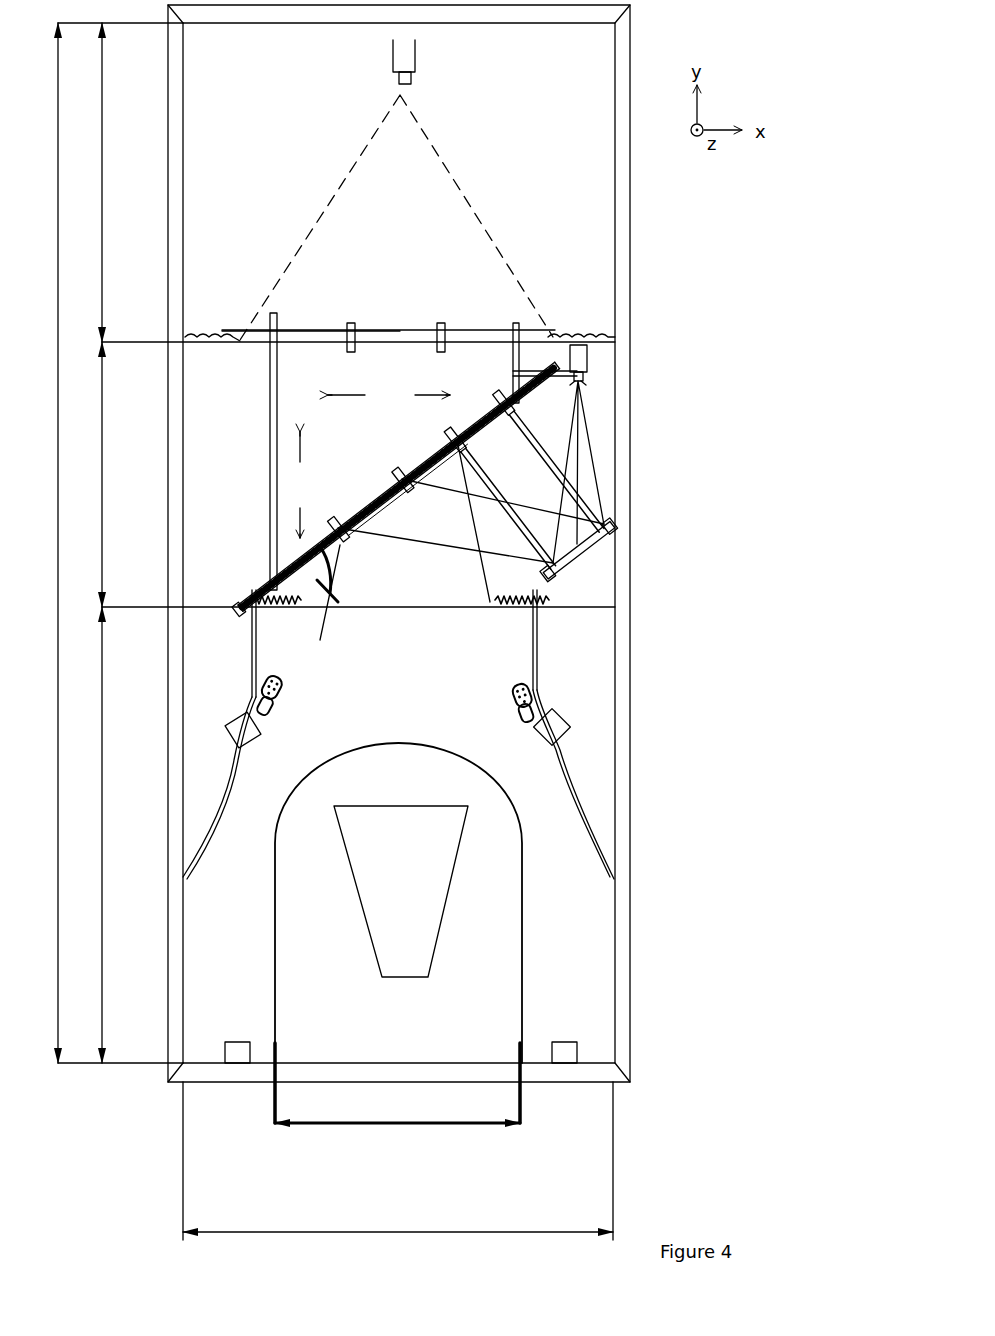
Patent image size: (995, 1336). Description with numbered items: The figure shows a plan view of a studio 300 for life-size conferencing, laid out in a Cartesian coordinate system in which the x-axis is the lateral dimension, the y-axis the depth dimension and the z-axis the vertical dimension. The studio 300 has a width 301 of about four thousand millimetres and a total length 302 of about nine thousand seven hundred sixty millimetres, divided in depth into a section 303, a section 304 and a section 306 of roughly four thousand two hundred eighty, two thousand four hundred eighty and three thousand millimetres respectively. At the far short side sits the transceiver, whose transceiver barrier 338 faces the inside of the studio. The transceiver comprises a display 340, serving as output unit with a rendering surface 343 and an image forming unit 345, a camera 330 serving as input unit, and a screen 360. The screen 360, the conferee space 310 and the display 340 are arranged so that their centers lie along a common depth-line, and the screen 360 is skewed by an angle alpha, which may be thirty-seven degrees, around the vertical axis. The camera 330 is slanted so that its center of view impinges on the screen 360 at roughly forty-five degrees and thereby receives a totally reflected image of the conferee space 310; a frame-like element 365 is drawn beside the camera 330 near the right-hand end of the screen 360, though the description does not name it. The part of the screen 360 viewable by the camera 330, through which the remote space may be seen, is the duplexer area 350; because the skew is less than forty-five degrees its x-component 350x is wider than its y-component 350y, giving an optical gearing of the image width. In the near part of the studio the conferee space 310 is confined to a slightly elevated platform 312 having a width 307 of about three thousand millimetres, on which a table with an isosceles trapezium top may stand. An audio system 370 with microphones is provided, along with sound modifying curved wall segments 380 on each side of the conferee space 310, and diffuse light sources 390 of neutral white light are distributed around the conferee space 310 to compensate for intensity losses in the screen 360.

The studio 300 is at (632, 680).
The width 301 is at (398, 1161).
The total length 302 is at (120, 543).
The section 303 is at (117, 835).
The section 304 is at (117, 474).
The section 306 is at (117, 182).
The width of the elevated platform 307 is at (397, 1083).
The conferee space 310 is at (417, 930).
The markings / elevated platform 312 is at (275, 975).
The camera 330 is at (585, 345).
The transceiver barrier 338 is at (512, 611).
The display 340 is at (400, 332).
The rendering surface 343 is at (410, 345).
The image forming unit 345 is at (396, 74).
The duplexer area 350 is at (413, 503).
The x-component of the duplex area 350x is at (389, 394).
The y-component of the duplex area 350y is at (299, 485).
The screen 360 is at (392, 475).
The second mirror frame 365 is at (575, 535).
The audio system 370 is at (518, 703).
The sound modifying curved wall segments 380 is at (535, 668).
The diffuse light sources 390 is at (230, 734).